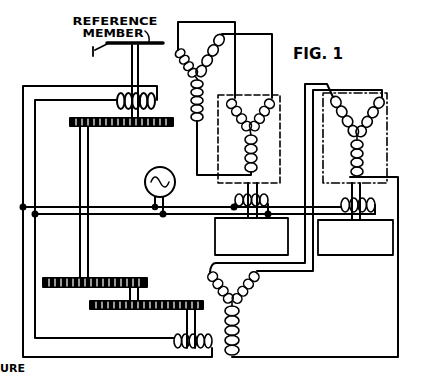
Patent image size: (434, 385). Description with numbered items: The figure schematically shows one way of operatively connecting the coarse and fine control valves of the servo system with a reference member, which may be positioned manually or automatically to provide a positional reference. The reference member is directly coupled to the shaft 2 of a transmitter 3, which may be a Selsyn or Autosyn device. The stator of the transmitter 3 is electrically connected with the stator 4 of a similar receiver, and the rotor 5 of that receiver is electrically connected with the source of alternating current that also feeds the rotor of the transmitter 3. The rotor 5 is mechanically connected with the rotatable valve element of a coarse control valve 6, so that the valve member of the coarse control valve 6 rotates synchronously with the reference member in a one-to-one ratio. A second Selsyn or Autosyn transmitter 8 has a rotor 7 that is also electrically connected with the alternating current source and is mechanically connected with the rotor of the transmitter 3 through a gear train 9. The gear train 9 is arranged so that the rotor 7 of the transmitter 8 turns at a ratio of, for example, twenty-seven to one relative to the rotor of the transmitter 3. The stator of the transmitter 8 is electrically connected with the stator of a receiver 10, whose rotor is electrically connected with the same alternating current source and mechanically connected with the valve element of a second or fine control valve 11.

The shaft 2 is at (132, 65).
The transmitter 3 is at (198, 76).
The stator of receiver 4 is at (250, 136).
The rotor of receiver 5 is at (235, 200).
The coarse control valve 6 is at (215, 250).
The rotor of second transmitter 7 is at (182, 334).
The second transmitter 8 is at (238, 314).
The gear train 9 is at (111, 278).
The receiver 10 is at (356, 140).
The fine control valve 11 is at (377, 256).